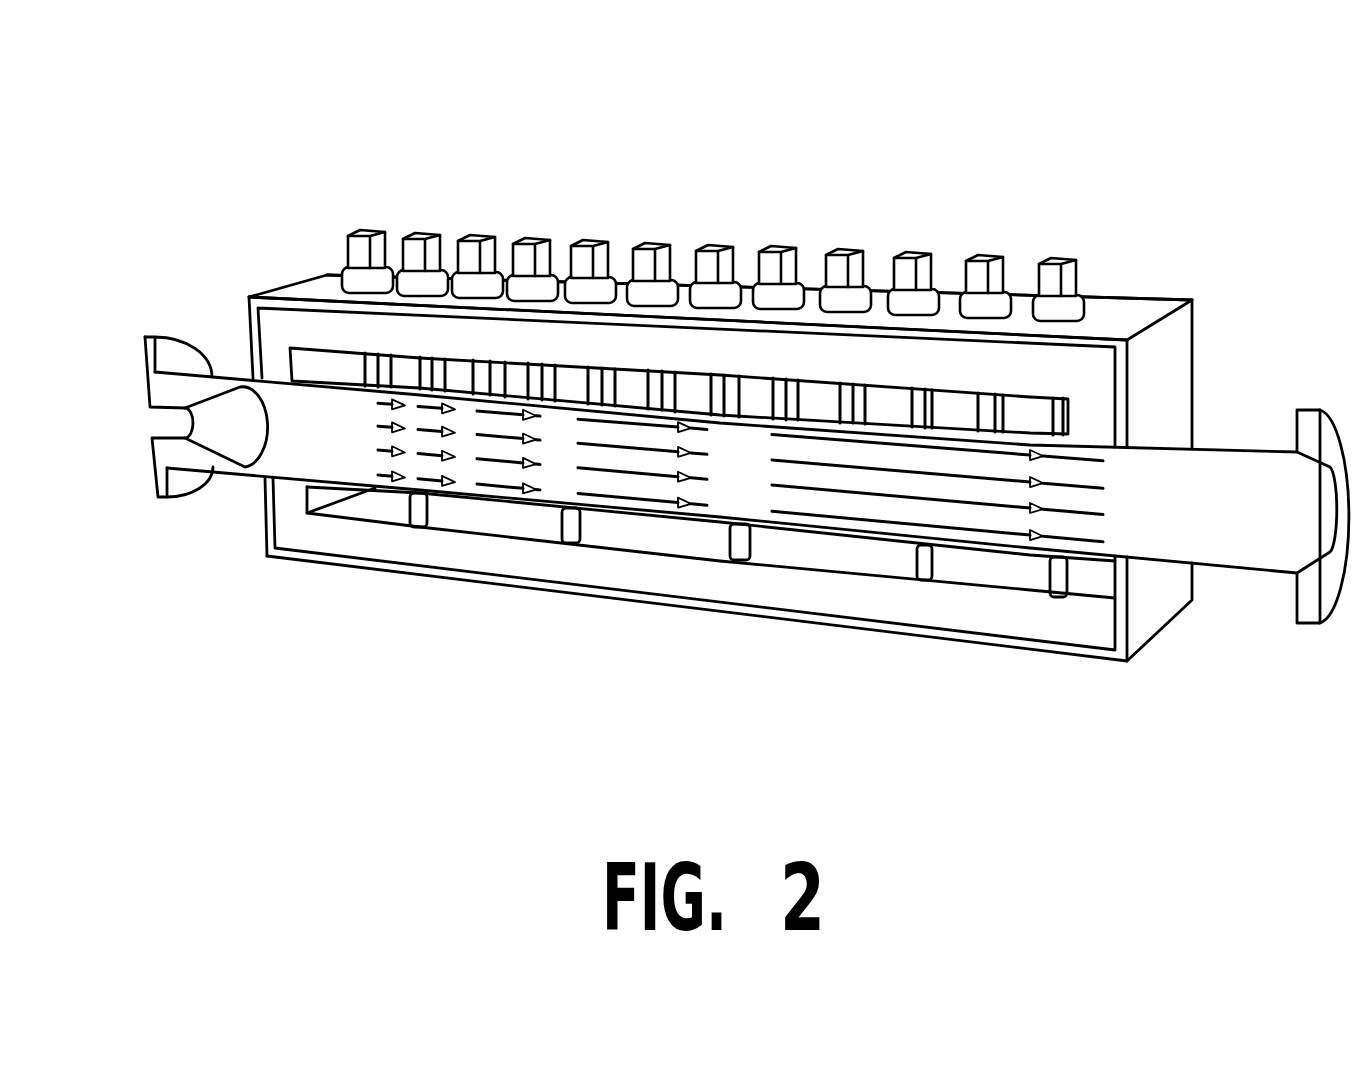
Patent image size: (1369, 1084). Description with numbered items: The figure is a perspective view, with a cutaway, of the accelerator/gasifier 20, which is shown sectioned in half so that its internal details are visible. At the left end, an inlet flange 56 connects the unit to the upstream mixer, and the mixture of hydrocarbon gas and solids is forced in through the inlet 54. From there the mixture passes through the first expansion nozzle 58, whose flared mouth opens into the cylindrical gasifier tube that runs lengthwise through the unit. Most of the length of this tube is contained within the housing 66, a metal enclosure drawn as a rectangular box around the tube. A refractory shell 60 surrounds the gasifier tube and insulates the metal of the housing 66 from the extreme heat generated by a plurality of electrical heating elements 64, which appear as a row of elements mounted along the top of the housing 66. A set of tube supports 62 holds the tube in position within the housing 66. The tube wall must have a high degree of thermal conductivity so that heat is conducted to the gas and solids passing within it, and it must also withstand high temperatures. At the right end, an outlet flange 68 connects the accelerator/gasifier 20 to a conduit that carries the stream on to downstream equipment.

The accelerator/gasifier 20 is at (692, 467).
The inlet 54 is at (153, 413).
The inlet flange 56 is at (147, 340).
The first expansion nozzle 58 is at (243, 438).
The refractory shell 60 is at (420, 553).
The tube supports 62 is at (728, 547).
The electrical heating elements 64 is at (652, 242).
The housing 66 is at (1137, 315).
The outlet flange 68 is at (1307, 623).